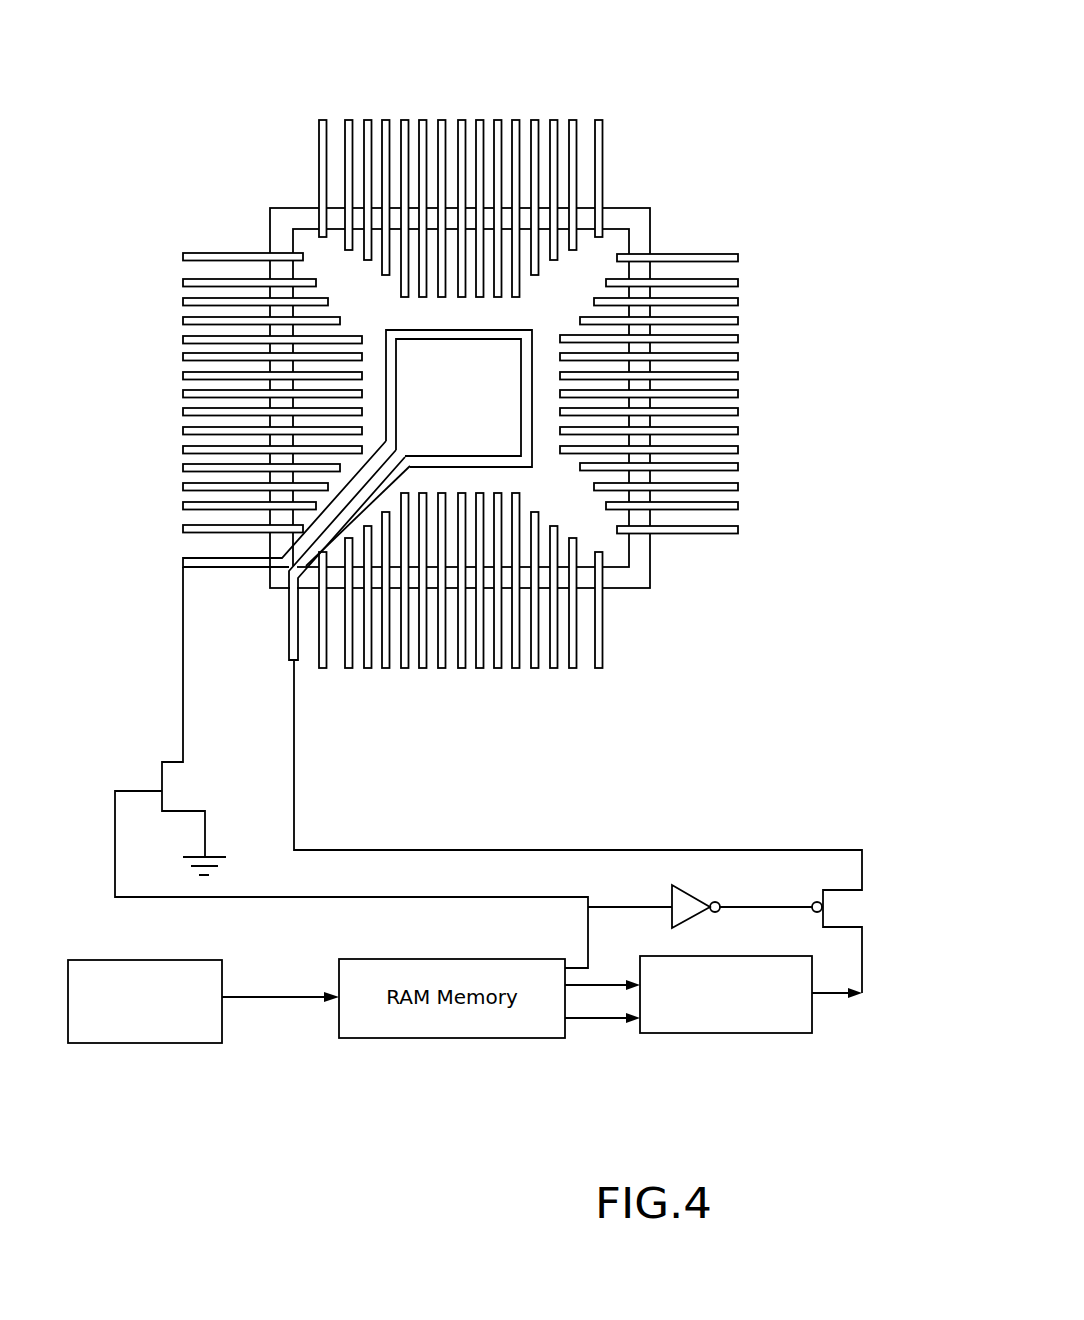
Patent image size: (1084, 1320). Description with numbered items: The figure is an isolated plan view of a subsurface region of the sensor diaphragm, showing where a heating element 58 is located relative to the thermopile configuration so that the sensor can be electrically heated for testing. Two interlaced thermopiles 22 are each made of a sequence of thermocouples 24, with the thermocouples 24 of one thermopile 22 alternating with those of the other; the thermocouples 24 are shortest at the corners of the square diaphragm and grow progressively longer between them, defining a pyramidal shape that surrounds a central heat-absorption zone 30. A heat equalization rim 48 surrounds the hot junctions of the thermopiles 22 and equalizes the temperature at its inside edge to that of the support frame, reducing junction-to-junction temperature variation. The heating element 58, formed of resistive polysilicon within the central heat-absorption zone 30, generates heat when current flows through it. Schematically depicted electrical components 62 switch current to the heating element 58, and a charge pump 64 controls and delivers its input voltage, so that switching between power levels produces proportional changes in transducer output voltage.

The thermopile 22 is at (284, 161).
The thermocouple 24 is at (517, 123).
The central heat-absorption zone 30 is at (475, 378).
The heat equalization rim 48 is at (643, 227).
The heating element 58 is at (288, 627).
The electrical components 62 is at (166, 1116).
The charge pump 64 is at (802, 1033).